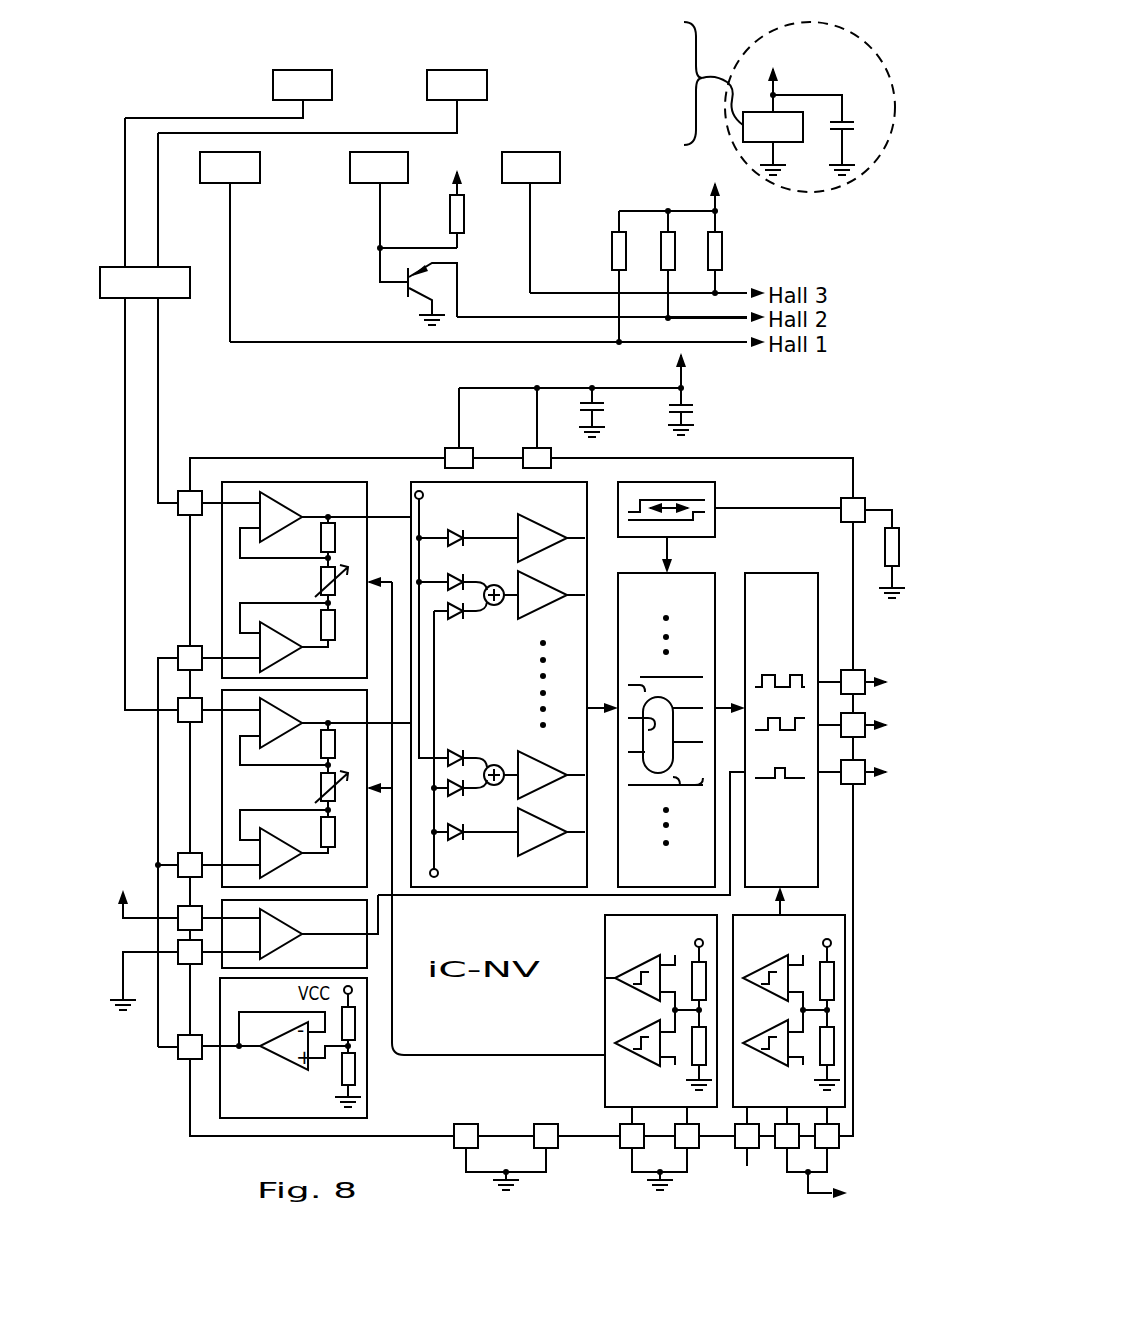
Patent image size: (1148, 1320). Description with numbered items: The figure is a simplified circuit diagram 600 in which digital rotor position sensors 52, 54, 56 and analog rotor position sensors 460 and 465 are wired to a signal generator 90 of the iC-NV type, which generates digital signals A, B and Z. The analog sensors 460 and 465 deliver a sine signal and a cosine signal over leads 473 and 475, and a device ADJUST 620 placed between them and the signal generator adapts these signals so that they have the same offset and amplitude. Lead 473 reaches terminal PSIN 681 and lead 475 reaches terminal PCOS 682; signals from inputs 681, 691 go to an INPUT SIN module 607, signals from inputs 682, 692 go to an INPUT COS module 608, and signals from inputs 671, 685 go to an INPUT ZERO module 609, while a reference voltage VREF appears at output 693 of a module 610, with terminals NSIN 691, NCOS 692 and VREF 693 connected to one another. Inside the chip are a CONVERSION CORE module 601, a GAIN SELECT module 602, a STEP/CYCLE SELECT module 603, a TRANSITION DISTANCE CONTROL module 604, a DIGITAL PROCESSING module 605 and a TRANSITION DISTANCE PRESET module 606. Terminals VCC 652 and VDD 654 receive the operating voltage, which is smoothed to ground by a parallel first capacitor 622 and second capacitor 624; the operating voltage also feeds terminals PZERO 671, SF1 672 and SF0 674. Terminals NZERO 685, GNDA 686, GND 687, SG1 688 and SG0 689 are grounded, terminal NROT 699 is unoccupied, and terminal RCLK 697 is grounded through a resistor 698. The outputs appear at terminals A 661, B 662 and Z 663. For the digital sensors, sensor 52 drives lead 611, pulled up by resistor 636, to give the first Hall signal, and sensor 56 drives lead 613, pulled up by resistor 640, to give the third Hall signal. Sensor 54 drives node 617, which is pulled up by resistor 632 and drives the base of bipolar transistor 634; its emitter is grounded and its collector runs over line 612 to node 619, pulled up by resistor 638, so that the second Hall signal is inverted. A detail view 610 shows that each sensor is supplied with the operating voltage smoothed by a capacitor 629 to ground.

The simplified circuit diagram 600 is at (182, 52).
The analog rotor position sensor 465 is at (273, 86).
The analog rotor position sensor 460 is at (487, 88).
The detail view / VREF module 610 is at (776, 96).
The capacitor 629 is at (855, 126).
The digital rotor position sensor 52 is at (225, 186).
The digital rotor position sensor 54 is at (373, 186).
The digital rotor position sensor 56 is at (545, 186).
The node 617 is at (380, 248).
The resistor 632 is at (464, 218).
The bipolar transistor 634 is at (393, 298).
The lead 611 is at (288, 342).
The line 612 is at (538, 317).
The lead 613 is at (538, 293).
The resistor 636 is at (612, 250).
The resistor 638 is at (661, 248).
The resistor 640 is at (722, 245).
The node 619 is at (668, 326).
The device ADJUST 620 is at (175, 298).
The lead 473 is at (159, 410).
The lead 475 is at (125, 560).
The first capacitor 622 is at (604, 412).
The second capacitor 624 is at (693, 412).
The terminal VCC 652 is at (452, 449).
The terminal VDD 654 is at (531, 449).
The terminal RCLK 697 is at (857, 498).
The resistor 698 is at (892, 528).
The TRANSITION DISTANCE PRESET module 606 is at (707, 492).
The INPUT SIN module 607 is at (356, 508).
The INPUT COS module 608 is at (356, 718).
The INPUT ZERO module 609 is at (356, 930).
The CONVERSION CORE module 601 is at (580, 508).
The TRANSITION DISTANCE CONTROL module 604 is at (708, 601).
The DIGITAL PROCESSING module 605 is at (798, 601).
The terminal PSIN 681 is at (188, 516).
The terminal NSIN 691 is at (188, 647).
The terminal PCOS 682 is at (185, 723).
The terminal NCOS 692 is at (185, 853).
The terminal PZERO 671 is at (178, 920).
The terminal NZERO 685 is at (185, 964).
The terminal VREF 693 is at (185, 1059).
The terminal A 661 is at (855, 670).
The terminal B 662 is at (855, 737).
The terminal Z 663 is at (855, 785).
The GAIN SELECT module 602 is at (663, 945).
The STEP/CYCLE SELECT module 603 is at (785, 945).
The terminal GNDA 686 is at (455, 1126).
The terminal GND 687 is at (535, 1126).
The terminal SG1 688 is at (620, 1126).
The terminal SG0 689 is at (690, 1148).
The terminal NROT 699 is at (744, 1150).
The terminal SF1 672 is at (783, 1149).
The terminal SF0 674 is at (840, 1145).
The signal generator 90 is at (220, 1140).